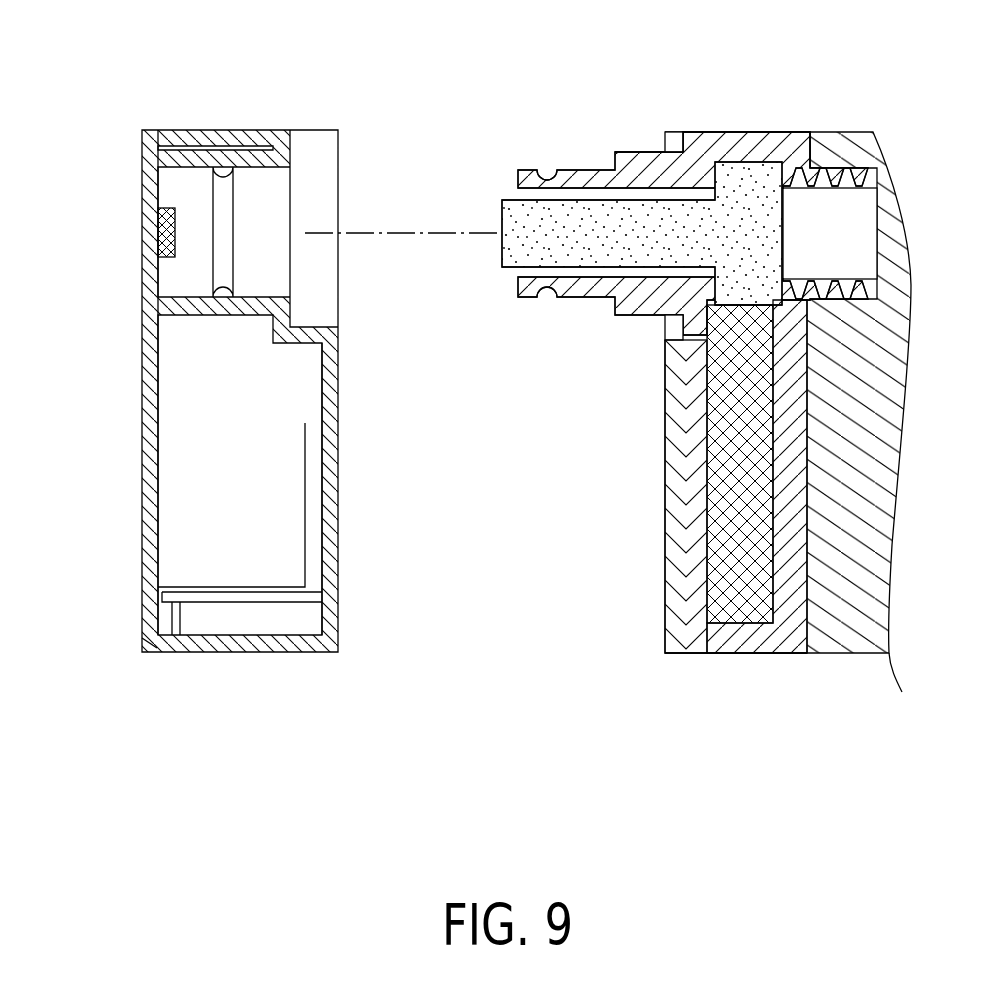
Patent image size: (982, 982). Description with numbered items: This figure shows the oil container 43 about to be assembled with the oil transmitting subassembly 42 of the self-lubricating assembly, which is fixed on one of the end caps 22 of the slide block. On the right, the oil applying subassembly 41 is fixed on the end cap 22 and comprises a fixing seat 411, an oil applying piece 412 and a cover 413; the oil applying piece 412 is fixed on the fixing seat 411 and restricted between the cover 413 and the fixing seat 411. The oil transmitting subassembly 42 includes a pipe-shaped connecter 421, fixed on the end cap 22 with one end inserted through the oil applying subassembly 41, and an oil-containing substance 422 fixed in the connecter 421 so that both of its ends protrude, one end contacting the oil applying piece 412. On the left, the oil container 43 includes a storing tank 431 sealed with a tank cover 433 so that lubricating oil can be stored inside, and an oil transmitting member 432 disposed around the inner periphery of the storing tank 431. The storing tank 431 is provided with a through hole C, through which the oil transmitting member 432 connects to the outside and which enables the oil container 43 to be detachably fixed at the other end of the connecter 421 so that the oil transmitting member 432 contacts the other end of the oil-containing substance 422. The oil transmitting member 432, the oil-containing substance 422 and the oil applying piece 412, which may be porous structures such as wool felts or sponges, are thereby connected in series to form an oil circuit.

The end cap 22 is at (838, 150).
The oil applying subassembly 41 is at (783, 667).
The fixing seat 411 is at (744, 632).
The oil applying piece 412 is at (734, 495).
The cover 413 is at (670, 589).
The oil transmitting subassembly 42 is at (563, 160).
The connecter 421 is at (635, 165).
The oil-containing substance 422 is at (566, 235).
The oil container 43 is at (272, 125).
The storing tank 431 is at (330, 552).
The oil transmitting member 432 is at (158, 232).
The tank cover 433 is at (150, 370).
The through hole C is at (258, 259).